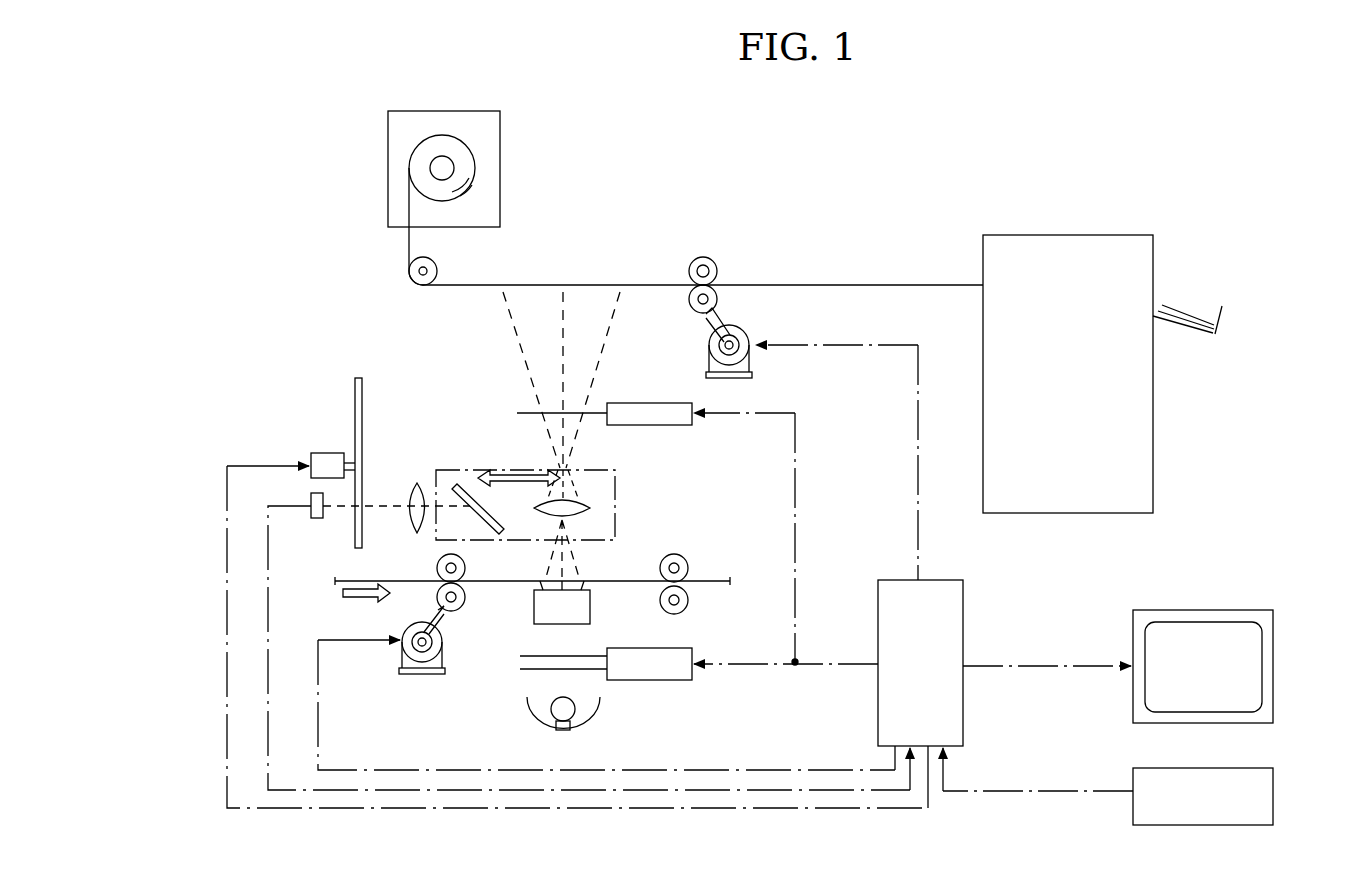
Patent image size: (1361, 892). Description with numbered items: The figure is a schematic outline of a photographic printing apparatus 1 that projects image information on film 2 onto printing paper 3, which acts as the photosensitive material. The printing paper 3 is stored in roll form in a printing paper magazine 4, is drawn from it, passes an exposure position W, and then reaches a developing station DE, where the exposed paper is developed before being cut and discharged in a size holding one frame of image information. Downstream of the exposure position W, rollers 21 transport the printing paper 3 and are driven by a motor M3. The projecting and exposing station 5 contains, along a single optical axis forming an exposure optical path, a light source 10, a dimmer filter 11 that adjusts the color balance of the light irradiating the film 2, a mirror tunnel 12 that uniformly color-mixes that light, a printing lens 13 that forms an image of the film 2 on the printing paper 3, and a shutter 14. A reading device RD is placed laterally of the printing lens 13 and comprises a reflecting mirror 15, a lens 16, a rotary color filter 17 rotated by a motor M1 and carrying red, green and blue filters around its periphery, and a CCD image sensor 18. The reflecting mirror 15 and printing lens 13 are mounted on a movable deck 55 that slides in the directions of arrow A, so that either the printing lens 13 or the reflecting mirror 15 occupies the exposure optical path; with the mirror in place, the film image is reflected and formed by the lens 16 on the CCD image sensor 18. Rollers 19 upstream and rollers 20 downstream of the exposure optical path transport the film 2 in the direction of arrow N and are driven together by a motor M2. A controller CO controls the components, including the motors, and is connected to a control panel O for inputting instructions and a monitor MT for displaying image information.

The photographic printing apparatus 1 is at (657, 823).
The film 2 is at (388, 578).
The printing paper 3 is at (409, 248).
The printing paper magazine 4 is at (500, 135).
The projecting and exposing station 5 is at (487, 700).
The light source 10 is at (595, 712).
The dimmer filter 11 is at (528, 651).
The mirror tunnel 12 is at (592, 610).
The printing lens 13 is at (592, 504).
The shutter 14 is at (602, 402).
The reflecting mirror 15 is at (463, 485).
The lens 16 is at (416, 481).
The rotary color filter 17 is at (363, 393).
The CCD image sensor 18 is at (318, 520).
The rollers 19 is at (465, 612).
The rollers 20 is at (684, 556).
The rollers 21 is at (713, 258).
The movable deck 55 is at (583, 468).
The arrow A is at (522, 470).
The exposure position W is at (582, 256).
The arrow N is at (366, 610).
The motor M1 is at (309, 455).
The motor M2 is at (410, 675).
The motor M3 is at (752, 333).
The reading device RD is at (318, 434).
The developing station DE is at (1066, 234).
The controller CO is at (965, 593).
The monitor MT is at (1265, 608).
The control panel O is at (1270, 768).